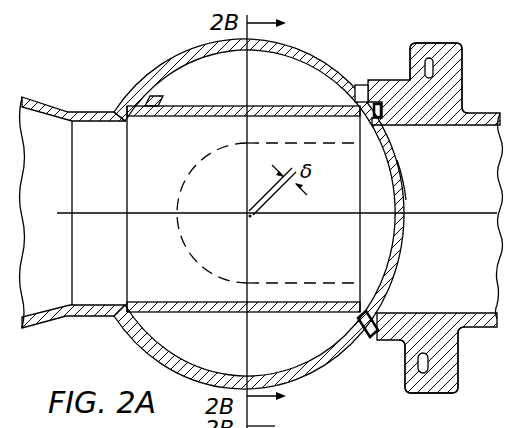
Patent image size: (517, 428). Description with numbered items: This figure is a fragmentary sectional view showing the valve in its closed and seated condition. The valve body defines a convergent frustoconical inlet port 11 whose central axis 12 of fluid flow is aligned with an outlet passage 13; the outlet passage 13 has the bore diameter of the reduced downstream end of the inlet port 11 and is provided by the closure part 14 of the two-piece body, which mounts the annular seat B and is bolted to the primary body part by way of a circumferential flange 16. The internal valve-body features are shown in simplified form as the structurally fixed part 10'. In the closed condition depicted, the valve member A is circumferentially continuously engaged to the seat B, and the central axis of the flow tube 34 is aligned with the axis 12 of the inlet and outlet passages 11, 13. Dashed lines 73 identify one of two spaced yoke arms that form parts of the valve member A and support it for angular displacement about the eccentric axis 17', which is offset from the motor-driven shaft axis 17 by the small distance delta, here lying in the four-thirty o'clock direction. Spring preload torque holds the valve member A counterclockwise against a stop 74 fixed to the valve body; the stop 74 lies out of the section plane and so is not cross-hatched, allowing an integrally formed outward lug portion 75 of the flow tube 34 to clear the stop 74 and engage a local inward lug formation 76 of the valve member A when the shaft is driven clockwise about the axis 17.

The simplified valve body 10' is at (259, 214).
The inlet port 11 is at (104, 187).
The central axis 12 is at (97, 234).
The outlet passage 13 is at (484, 257).
The closure part 14 is at (467, 335).
The circumferential flange 16 is at (453, 95).
The axis of rotary actuating displacement 17 is at (277, 221).
The eccentric axis 17' is at (271, 233).
The flow tube 34 is at (258, 314).
The yoke arm 73 is at (272, 143).
The stop 74 is at (366, 85).
The outward lug portion 75 is at (160, 98).
The inward lug formation 76 is at (362, 118).
The valve member A is at (407, 167).
The annular seat B is at (374, 314).